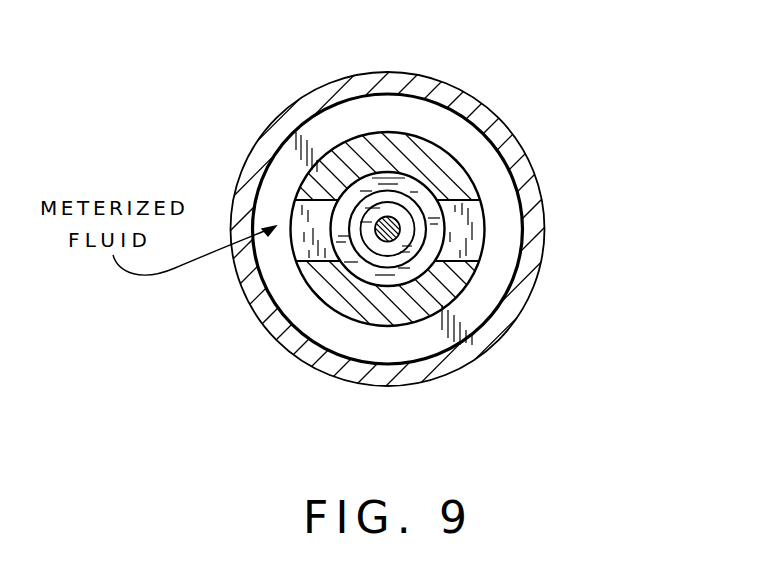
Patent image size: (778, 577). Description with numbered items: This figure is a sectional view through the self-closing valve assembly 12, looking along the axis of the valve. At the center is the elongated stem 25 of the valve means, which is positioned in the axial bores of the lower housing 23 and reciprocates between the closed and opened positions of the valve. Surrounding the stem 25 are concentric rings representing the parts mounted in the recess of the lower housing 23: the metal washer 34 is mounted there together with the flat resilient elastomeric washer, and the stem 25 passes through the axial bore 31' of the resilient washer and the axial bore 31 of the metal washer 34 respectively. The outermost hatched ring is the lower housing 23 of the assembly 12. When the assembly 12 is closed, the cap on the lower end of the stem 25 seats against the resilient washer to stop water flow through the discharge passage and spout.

The self-closing valve assembly 12 is at (473, 100).
The lower housing 23 is at (333, 296).
The stem 25 is at (396, 220).
The axial bore 31 is at (351, 178).
The axial bore 31' is at (385, 134).
The metal washer 34 is at (403, 280).